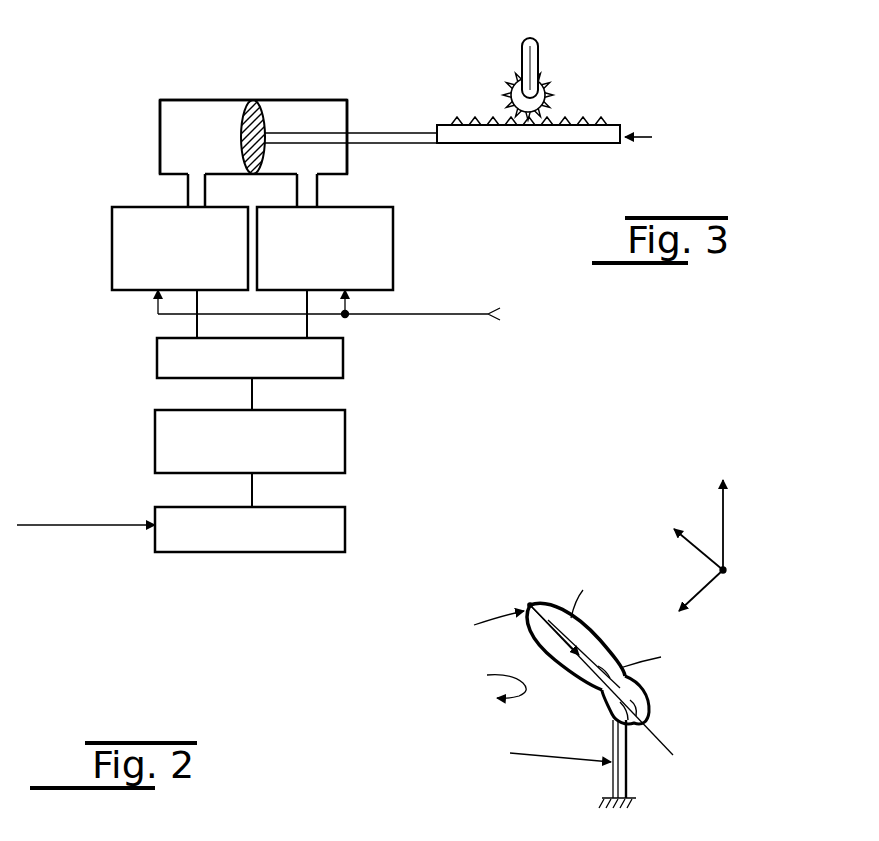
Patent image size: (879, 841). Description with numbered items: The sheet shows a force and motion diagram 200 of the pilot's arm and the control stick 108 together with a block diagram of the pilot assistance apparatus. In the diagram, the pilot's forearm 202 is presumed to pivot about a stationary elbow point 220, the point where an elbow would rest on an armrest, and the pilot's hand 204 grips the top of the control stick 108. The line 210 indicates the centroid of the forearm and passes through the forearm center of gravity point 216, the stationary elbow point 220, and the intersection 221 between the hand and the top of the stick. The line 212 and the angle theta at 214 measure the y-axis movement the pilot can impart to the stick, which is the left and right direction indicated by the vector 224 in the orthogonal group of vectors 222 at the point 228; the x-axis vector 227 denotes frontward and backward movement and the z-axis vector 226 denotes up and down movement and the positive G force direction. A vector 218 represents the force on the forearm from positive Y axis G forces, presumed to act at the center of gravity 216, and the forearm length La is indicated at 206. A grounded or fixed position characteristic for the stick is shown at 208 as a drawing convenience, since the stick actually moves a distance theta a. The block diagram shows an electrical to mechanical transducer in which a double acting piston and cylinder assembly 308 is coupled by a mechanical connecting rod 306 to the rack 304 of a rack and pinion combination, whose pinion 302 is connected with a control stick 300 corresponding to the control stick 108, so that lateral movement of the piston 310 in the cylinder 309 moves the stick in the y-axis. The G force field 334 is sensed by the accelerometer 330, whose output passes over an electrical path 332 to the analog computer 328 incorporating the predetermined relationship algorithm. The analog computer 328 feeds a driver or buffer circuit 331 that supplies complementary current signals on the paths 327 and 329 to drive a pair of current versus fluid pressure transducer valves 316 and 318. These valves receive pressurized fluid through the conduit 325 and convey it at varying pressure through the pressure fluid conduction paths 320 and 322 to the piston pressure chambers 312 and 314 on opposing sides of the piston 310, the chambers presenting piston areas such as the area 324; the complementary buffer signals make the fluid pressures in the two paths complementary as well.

In FIG. 3, the control stick 300 is at (539, 56).
In FIG. 3, the pinion 302 is at (553, 92).
In FIG. 3, the rack 304 is at (572, 145).
In FIG. 3, the mechanical connecting rod 306 is at (385, 143).
In FIG. 3, the double acting piston and cylinder assembly 308 is at (358, 87).
In FIG. 3, the cylinder 309 is at (205, 100).
In FIG. 3, the piston 310 is at (252, 99).
In FIG. 3, the piston pressure chamber 312 is at (160, 135).
In FIG. 3, the piston pressure chamber 314 is at (349, 112).
In FIG. 3, the current versus fluid pressure transducer valve 316 is at (392, 232).
In FIG. 3, the current versus fluid pressure transducer valve 318 is at (112, 216).
In FIG. 3, the pressure fluid conduction path 320 is at (188, 194).
In FIG. 3, the pressure fluid conduction path 322 is at (317, 193).
In FIG. 3, the piston area A2 324 is at (266, 108).
In FIG. 3, the conduit 325 is at (478, 276).
In FIG. 3, the current signal path 327 is at (197, 330).
In FIG. 3, the current signal path 329 is at (307, 327).
In FIG. 3, the driver or buffer circuit 331 is at (343, 358).
In FIG. 3, the analog computer 328 is at (345, 440).
In FIG. 3, the accelerometer 330 is at (345, 518).
In FIG. 3, the electrical path 332 is at (252, 494).
In FIG. 3, the G force field 334 is at (100, 524).
In FIG. 2, the force and motion diagram 200 is at (555, 695).
In FIG. 2, the pilot's forearm 202 is at (534, 639).
In FIG. 2, the pilot's hand 204 is at (604, 710).
In FIG. 2, the forearm length La 206 is at (494, 805).
In FIG. 2, the grounded or fixed position characteristic 208 is at (611, 807).
In FIG. 2, the forearm centroid line 210 is at (653, 747).
In FIG. 2, the movement line 212 is at (673, 708).
In FIG. 2, the angle theta 214 is at (603, 666).
In FIG. 2, the forearm center of gravity point 216 is at (598, 564).
In FIG. 2, the force vector 218 is at (488, 681).
In FIG. 2, the stationary elbow point 220 is at (530, 605).
In FIG. 2, the hand and stick intersection 221 is at (627, 688).
In FIG. 2, the orthogonal group of vectors 222 is at (698, 577).
In FIG. 2, the y-axis vector 224 is at (700, 595).
In FIG. 2, the z-axis vector 226 is at (725, 509).
In FIG. 2, the x-axis vector 227 is at (687, 538).
In FIG. 2, the origin point 228 is at (733, 570).
In FIG. 2, the control stick 108 is at (627, 782).